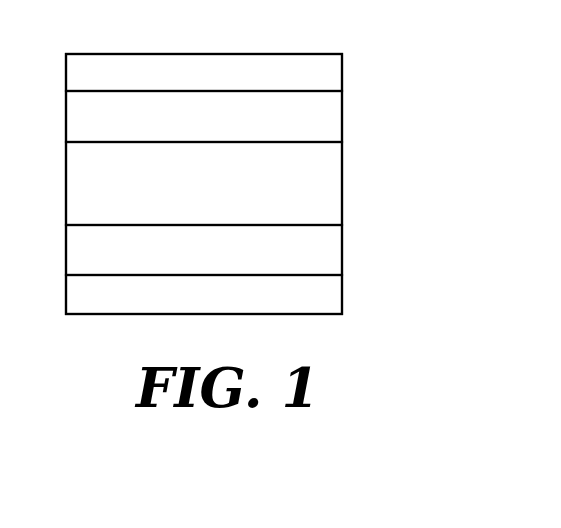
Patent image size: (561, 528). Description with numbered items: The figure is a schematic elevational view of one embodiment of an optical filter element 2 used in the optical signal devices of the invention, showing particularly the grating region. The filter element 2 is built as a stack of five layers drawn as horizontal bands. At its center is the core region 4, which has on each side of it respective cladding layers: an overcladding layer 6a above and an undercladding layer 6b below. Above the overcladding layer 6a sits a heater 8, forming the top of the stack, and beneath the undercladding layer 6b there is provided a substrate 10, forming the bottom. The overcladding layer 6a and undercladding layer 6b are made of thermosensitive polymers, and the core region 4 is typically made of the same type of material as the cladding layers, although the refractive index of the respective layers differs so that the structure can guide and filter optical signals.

The filter element 2 is at (407, 73).
The heater 8 is at (332, 74).
The overcladding layer 6a is at (323, 119).
The core region 4 is at (330, 192).
The undercladding layer 6b is at (323, 248).
The substrate 10 is at (318, 295).